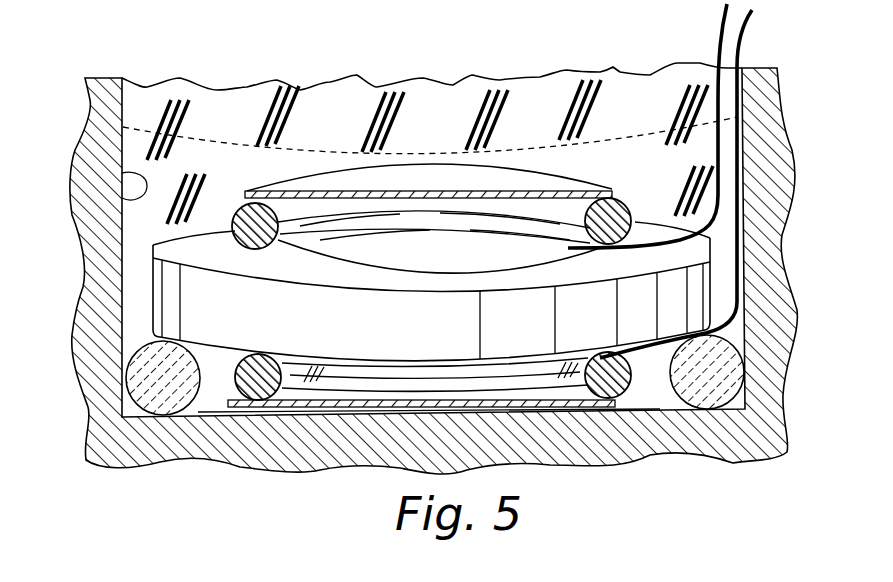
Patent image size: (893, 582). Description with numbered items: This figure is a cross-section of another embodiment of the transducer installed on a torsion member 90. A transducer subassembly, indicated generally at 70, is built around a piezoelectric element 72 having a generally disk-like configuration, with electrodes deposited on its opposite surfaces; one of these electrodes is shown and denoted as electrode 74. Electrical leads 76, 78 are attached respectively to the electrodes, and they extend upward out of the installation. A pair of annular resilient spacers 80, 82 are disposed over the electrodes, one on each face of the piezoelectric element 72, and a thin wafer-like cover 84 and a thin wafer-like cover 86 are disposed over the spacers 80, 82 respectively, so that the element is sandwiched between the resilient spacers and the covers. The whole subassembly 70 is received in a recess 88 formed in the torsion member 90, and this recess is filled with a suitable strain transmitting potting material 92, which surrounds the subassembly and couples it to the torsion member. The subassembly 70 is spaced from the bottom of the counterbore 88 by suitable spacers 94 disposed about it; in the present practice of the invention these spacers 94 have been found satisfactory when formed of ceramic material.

The transducer subassembly 70 is at (216, 370).
The piezoelectric element 72 is at (152, 283).
The electrode 74 is at (402, 241).
The electrical lead 76 is at (719, 24).
The electrical lead 78 is at (745, 30).
The annular resilient spacer 80 is at (240, 213).
The annular resilient spacer 82 is at (242, 395).
The wafer-like cover 84 is at (445, 194).
The wafer-like cover 86 is at (376, 405).
The recess 88 is at (122, 198).
The torsion member 90 is at (106, 78).
The strain transmitting potting material 92 is at (608, 69).
The spacer 94 is at (147, 342).